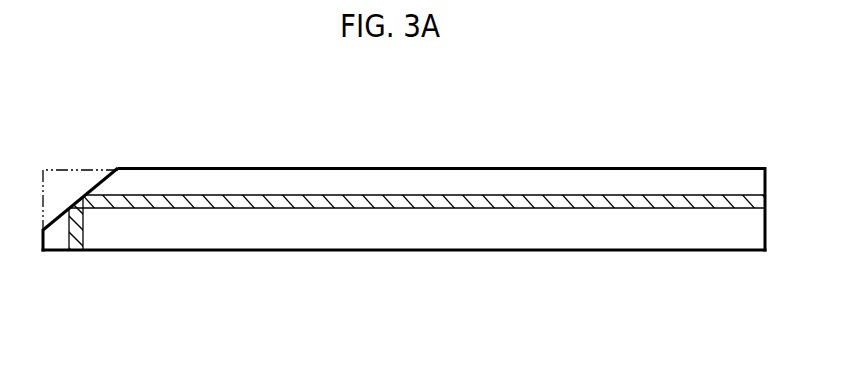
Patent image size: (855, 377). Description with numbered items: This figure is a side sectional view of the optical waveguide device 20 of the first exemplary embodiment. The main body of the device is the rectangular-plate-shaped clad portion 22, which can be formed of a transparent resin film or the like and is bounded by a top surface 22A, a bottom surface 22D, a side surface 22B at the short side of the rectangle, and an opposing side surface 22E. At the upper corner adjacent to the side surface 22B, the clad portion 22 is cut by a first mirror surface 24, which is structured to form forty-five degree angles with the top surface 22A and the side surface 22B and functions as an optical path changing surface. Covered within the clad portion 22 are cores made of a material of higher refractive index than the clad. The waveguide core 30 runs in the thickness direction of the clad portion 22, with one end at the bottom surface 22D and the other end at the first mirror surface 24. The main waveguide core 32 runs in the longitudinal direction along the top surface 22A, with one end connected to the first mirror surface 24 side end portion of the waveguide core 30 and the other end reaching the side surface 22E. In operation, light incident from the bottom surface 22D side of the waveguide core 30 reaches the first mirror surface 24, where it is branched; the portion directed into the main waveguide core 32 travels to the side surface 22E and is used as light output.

The optical waveguide device 20 is at (628, 83).
The clad portion 22 is at (682, 165).
The top surface 22A is at (307, 167).
The side surface at the short side 22B is at (41, 241).
The bottom surface 22D is at (420, 252).
The side surface 22E is at (767, 230).
The first mirror surface 24 is at (95, 187).
The waveguide core 30 is at (70, 238).
The main waveguide core 32 is at (512, 194).